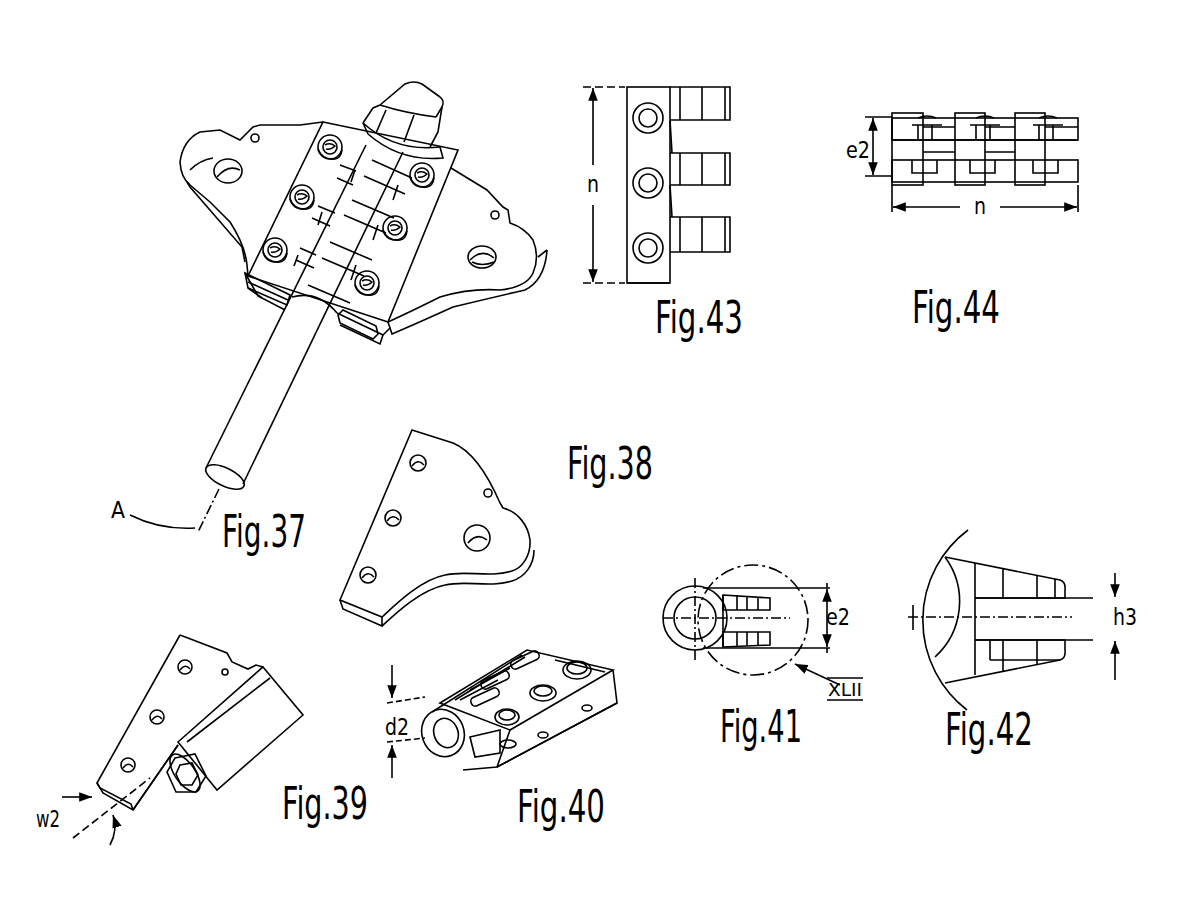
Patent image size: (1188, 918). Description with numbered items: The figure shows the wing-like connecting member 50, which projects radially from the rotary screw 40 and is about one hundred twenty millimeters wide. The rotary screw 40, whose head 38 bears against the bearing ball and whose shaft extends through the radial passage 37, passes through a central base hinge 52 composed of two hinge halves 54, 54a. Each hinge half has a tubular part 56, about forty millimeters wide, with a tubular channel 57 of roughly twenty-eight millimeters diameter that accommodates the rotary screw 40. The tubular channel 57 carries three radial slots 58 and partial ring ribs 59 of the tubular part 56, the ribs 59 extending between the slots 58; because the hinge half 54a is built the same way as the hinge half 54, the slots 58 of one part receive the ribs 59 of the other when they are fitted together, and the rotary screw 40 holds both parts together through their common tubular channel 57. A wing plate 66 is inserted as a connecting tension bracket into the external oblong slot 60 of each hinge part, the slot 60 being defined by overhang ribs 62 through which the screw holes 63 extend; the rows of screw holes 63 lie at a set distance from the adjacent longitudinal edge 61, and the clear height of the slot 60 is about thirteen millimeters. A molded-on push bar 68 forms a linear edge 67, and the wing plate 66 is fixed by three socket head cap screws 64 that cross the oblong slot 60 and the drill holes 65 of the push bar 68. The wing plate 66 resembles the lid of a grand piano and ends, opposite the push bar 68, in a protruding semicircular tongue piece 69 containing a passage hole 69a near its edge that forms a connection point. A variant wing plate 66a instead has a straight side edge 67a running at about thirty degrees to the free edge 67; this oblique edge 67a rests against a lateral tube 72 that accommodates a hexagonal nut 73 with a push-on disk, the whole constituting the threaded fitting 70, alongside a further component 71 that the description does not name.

In FIG. 37, the radial passage 37 is at (364, 126).
In FIG. 37, the head of rotary screw 38 is at (445, 115).
In FIG. 37, the rotary screw 40 is at (243, 382).
In FIG. 37, the connecting member 50 is at (428, 320).
In FIG. 44, the connecting member 50 is at (1088, 134).
In FIG. 37, the central base hinge 52 is at (356, 335).
In FIG. 37, the hinge half 54 is at (447, 158).
In FIG. 40, the hinge half 54 is at (560, 643).
In FIG. 37, the hinge half 54a is at (248, 272).
In FIG. 43, the hinge half 54a is at (628, 286).
In FIG. 40, the tubular part 56 is at (437, 702).
In FIG. 41, the tubular part 56 is at (668, 595).
In FIG. 40, the tubular channel 57 is at (447, 742).
In FIG. 41, the tubular channel 57 is at (700, 615).
In FIG. 42, the tubular channel 57 is at (937, 605).
In FIG. 37, the radial slots 58 is at (345, 170).
In FIG. 40, the radial slots 58 is at (480, 690).
In FIG. 43, the radial slots 58 is at (677, 137).
In FIG. 37, the partial ring ribs 59 is at (360, 195).
In FIG. 40, the partial ring ribs 59 is at (465, 708).
In FIG. 43, the partial ring ribs 59 is at (712, 103).
In FIG. 40, the external oblong slot 60 is at (605, 683).
In FIG. 41, the external oblong slot 60 is at (772, 620).
In FIG. 42, the external oblong slot 60 is at (1045, 608).
In FIG. 44, the external oblong slot 60 is at (905, 150).
In FIG. 40, the longitudinal edge 61 is at (535, 758).
In FIG. 43, the longitudinal edge 61 is at (625, 277).
In FIG. 40, the overhang ribs 62 is at (500, 740).
In FIG. 41, the overhang ribs 62 is at (760, 600).
In FIG. 42, the overhang ribs 62 is at (1020, 580).
In FIG. 40, the screw holes 63 is at (520, 748).
In FIG. 43, the screw holes 63 is at (645, 175).
In FIG. 37, the socket head cap screws 64 is at (318, 146).
In FIG. 44, the socket head cap screws 64 is at (978, 168).
In FIG. 38, the drill holes 65 is at (374, 572).
In FIG. 39, the drill holes 65 is at (164, 714).
In FIG. 37, the wing plate 66 is at (190, 192).
In FIG. 38, the wing plate 66 is at (483, 462).
In FIG. 39, the wing plate 66a is at (222, 642).
In FIG. 37, the linear edge 67 is at (250, 290).
In FIG. 38, the linear edge 67 is at (383, 487).
In FIG. 39, the linear edge 67 is at (145, 690).
In FIG. 43, the linear edge 67 is at (627, 222).
In FIG. 39, the straight side edge 67a is at (150, 757).
In FIG. 37, the push bar 68 is at (386, 338).
In FIG. 38, the push bar 68 is at (421, 455).
In FIG. 39, the push bar 68 is at (188, 634).
In FIG. 37, the semicircular tongue piece 69 is at (190, 147).
In FIG. 38, the semicircular tongue piece 69 is at (533, 540).
In FIG. 37, the passage hole 69a is at (484, 265).
In FIG. 38, the passage hole 69a is at (482, 538).
In FIG. 39, the threaded fitting 70 is at (282, 745).
In FIG. 39, the nut 71 is at (207, 792).
In FIG. 39, the lateral tube 72 is at (280, 705).
In FIG. 39, the hexagonal nut 73 is at (197, 793).